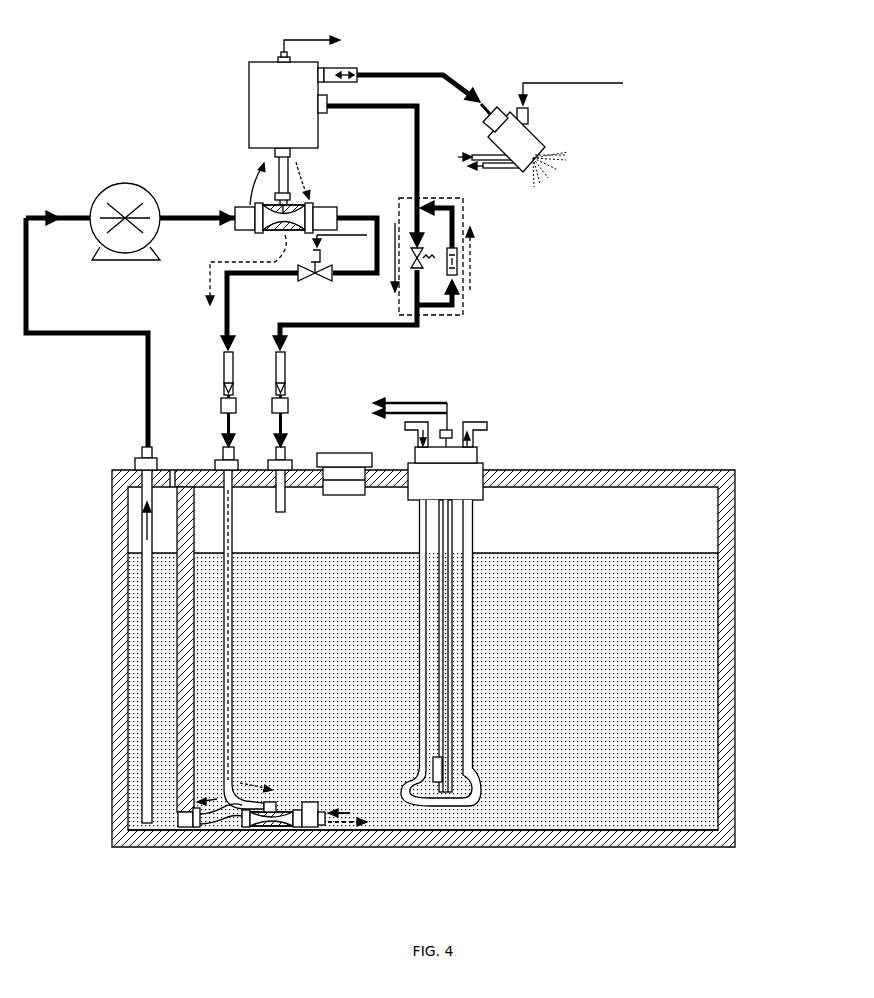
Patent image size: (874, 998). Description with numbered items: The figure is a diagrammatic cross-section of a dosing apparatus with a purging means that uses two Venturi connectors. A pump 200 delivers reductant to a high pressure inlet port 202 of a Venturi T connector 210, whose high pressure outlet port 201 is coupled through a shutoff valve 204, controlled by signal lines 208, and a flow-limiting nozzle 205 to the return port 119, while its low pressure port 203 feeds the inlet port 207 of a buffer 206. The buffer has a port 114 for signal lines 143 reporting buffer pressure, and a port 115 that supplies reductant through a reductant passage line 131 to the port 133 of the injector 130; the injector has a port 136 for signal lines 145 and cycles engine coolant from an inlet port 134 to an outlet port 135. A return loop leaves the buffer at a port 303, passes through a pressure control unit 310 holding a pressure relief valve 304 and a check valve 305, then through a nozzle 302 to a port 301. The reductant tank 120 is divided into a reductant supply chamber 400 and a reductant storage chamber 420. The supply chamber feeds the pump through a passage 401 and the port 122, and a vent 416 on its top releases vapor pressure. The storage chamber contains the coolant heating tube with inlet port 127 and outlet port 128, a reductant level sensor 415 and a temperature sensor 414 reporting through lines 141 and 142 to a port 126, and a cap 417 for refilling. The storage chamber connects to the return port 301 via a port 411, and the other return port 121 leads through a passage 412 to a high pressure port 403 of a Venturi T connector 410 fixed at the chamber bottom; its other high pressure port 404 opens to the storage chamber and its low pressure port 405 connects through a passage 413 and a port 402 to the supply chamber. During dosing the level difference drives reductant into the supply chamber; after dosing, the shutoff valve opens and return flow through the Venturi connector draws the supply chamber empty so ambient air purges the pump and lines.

The port 114 is at (277, 56).
The port 115 is at (324, 66).
The return port 119 is at (221, 407).
The reductant tank 120 is at (737, 630).
The return port 121 is at (222, 453).
The port 122 is at (135, 458).
The port 126 is at (465, 468).
The inlet port 127 is at (405, 423).
The outlet port 128 is at (497, 423).
The reductant injector 130 is at (546, 134).
The reductant passage line 131 is at (444, 74).
The port 133 is at (483, 122).
The inlet port 134 is at (472, 155).
The outlet port 135 is at (500, 168).
The port 136 is at (528, 111).
The signal lines 141 is at (442, 410).
The signal lines 142 is at (406, 402).
The signal lines 143 is at (316, 38).
The signal lines 145 is at (583, 83).
The pump 200 is at (130, 185).
The high pressure outlet port 201 is at (340, 204).
The high pressure inlet port 202 is at (250, 207).
The low pressure port 203 is at (258, 232).
The shutoff valve 204 is at (298, 274).
The nozzle 205 is at (223, 373).
The buffer 206 is at (249, 100).
The inlet port 207 is at (290, 153).
The signal lines 208 is at (322, 256).
The Venturi T connector 210 is at (325, 190).
The port 301 is at (288, 407).
The nozzle 302 is at (285, 373).
The port 303 is at (325, 110).
The pressure relief valve 304 is at (420, 272).
The check valve 305 is at (457, 262).
The pressure control unit 310 is at (472, 214).
The reductant supply chamber 400 is at (135, 548).
The passage 401 is at (133, 823).
The port 402 is at (188, 828).
The high pressure port 403 is at (242, 828).
The high pressure port 404 is at (308, 828).
The low pressure port 405 is at (274, 803).
The Venturi T connector 410 is at (261, 836).
The port 411 is at (292, 452).
The passage 412 is at (233, 546).
The passage 413 is at (234, 788).
The temperature sensor 414 is at (433, 760).
The reductant level sensor 415 is at (440, 668).
The vent 416 is at (172, 470).
The cap 417 is at (340, 492).
The reductant storage chamber 420 is at (693, 513).